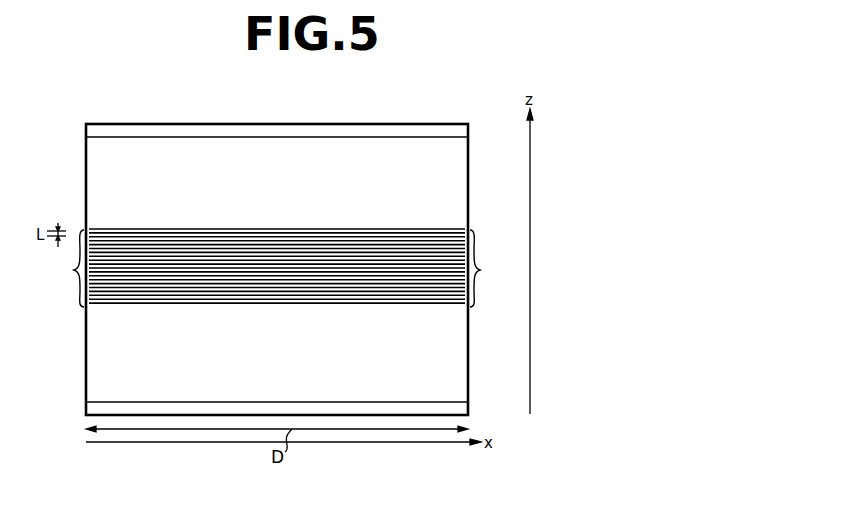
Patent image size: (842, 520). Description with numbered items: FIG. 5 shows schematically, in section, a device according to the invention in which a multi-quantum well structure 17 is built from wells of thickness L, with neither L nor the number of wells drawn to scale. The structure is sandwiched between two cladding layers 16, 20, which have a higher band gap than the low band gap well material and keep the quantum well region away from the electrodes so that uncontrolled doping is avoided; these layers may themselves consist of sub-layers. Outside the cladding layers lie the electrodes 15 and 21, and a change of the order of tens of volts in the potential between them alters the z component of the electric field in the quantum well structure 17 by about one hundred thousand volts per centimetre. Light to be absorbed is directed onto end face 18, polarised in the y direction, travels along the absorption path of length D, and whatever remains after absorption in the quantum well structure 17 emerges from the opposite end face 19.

The electrode 15 is at (300, 405).
The cladding layer 16 is at (291, 368).
The multi-quantum well structure 17 is at (294, 280).
The end face 18 is at (73, 270).
The end face 19 is at (481, 270).
The cladding layer 20 is at (289, 208).
The electrode 21 is at (274, 130).